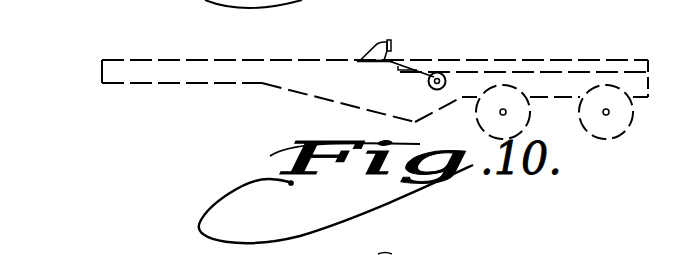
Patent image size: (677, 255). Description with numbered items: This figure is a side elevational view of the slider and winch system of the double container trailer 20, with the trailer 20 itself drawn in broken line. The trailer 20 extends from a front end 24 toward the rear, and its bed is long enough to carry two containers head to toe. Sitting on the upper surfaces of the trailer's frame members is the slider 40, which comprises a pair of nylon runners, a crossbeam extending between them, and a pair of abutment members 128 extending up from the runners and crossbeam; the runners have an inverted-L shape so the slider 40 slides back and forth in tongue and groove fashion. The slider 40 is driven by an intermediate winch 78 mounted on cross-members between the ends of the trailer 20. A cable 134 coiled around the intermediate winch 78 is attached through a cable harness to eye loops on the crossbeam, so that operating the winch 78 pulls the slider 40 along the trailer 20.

The double container trailer 20 is at (291, 100).
The front end 24 is at (100, 74).
The slider 40 is at (372, 46).
The intermediate winch 78 is at (441, 73).
The abutment members 128 is at (392, 44).
The cable 134 is at (390, 63).